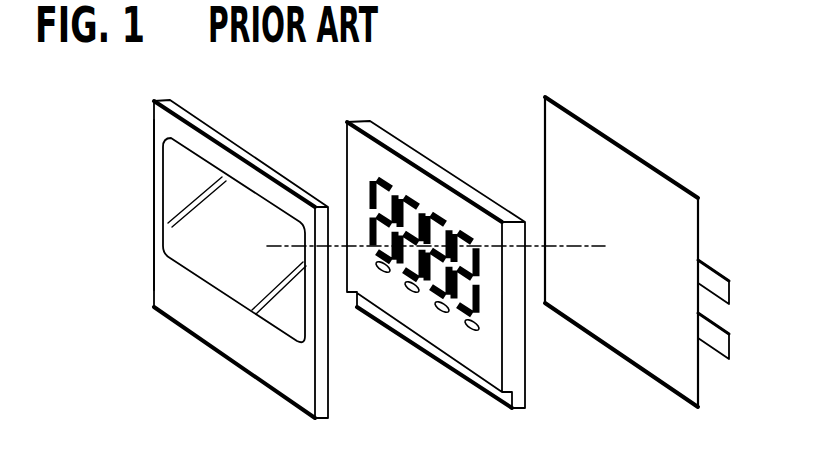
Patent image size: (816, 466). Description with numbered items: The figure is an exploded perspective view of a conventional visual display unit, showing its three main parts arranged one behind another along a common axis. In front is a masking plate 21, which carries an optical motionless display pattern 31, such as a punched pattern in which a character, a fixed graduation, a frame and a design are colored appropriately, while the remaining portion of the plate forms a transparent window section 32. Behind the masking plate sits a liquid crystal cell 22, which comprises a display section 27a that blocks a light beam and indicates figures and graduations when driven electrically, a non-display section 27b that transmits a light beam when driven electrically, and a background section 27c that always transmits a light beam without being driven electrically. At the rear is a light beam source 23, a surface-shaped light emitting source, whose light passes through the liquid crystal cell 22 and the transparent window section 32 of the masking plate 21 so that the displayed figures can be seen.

The masking plate 21 is at (213, 352).
The liquid crystal cell 22 is at (473, 387).
The light beam source 23 is at (610, 350).
The display section 27a is at (387, 178).
The non-display section 27b is at (440, 216).
The background section 27c is at (437, 302).
The optical motionless display pattern 31 is at (167, 277).
The transparent window section 32 is at (235, 207).